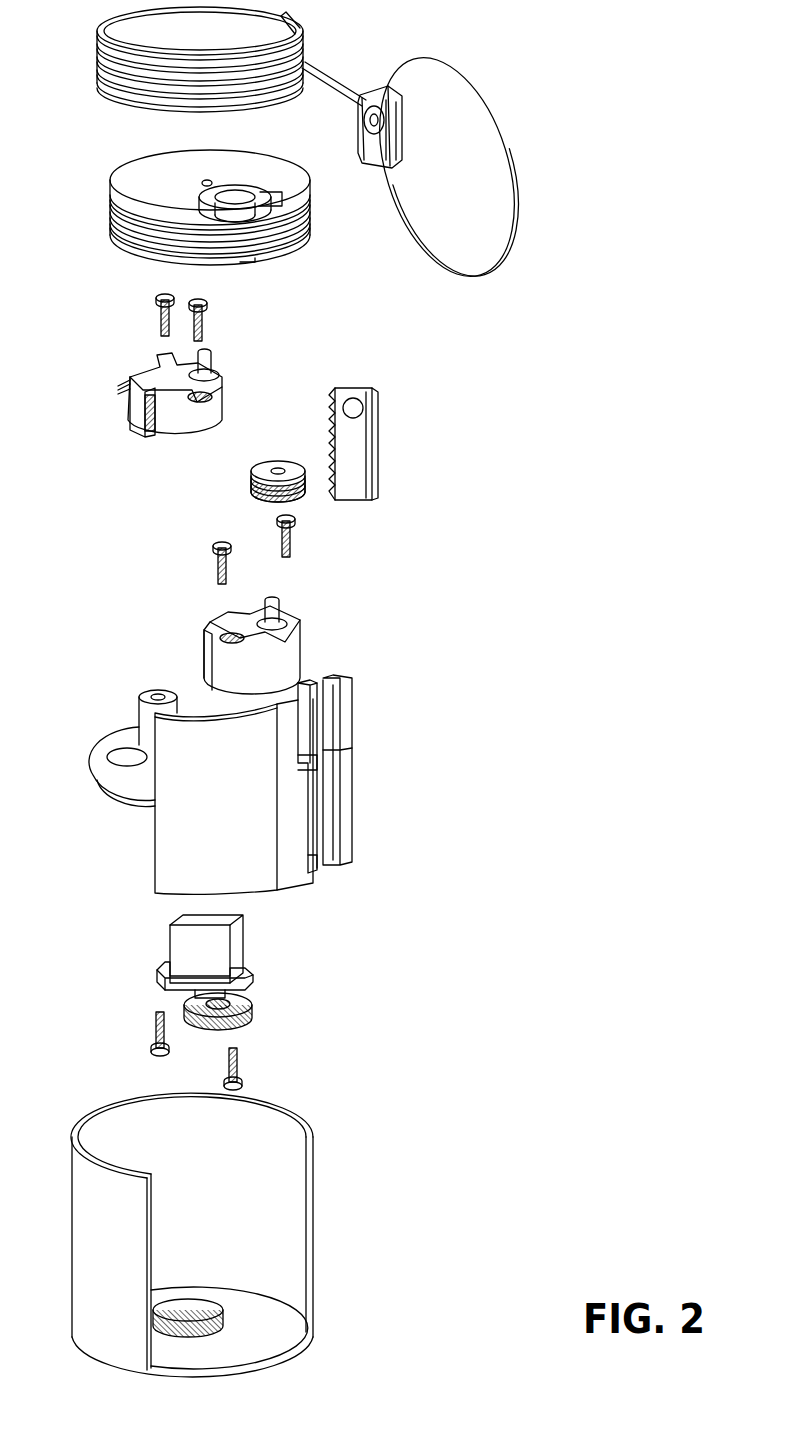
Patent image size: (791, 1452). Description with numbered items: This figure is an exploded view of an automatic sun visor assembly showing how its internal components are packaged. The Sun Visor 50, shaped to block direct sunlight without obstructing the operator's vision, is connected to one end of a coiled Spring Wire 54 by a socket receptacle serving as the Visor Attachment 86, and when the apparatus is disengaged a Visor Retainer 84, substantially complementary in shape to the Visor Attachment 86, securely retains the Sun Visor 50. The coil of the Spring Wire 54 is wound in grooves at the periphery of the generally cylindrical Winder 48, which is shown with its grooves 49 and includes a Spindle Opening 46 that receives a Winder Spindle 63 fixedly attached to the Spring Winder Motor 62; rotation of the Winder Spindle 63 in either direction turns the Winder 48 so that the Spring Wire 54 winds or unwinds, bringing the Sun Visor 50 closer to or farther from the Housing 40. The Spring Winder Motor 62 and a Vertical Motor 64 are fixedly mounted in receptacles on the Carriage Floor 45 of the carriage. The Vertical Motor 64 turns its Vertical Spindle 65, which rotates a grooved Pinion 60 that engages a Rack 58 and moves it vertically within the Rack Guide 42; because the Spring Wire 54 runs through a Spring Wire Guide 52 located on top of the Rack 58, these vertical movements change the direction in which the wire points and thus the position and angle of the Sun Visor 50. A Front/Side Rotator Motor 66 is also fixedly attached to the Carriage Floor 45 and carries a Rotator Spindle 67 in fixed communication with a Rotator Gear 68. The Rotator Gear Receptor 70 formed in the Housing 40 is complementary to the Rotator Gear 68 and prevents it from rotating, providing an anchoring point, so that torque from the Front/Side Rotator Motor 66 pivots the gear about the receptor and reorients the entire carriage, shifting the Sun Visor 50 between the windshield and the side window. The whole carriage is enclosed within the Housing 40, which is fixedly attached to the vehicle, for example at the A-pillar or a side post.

The Housing 40 is at (313, 1133).
The Rack Guide 42 is at (352, 700).
The Carriage Floor 45 is at (115, 793).
The Spindle Opening 46 is at (205, 185).
The Winder 48 is at (132, 178).
The spool groove 49 is at (120, 228).
The Sun Visor 50 is at (514, 192).
The Spring Wire Guide 52 is at (362, 405).
The Spring Wire 54 is at (300, 28).
The Rack 58 is at (372, 440).
The Pinion 60 is at (255, 485).
The Spring Winder Motor 62 is at (222, 410).
The Winder Spindle 63 is at (211, 365).
The Vertical Motor 64 is at (300, 655).
The Vertical Spindle 65 is at (275, 610).
The Front/Side Rotator Motor 66 is at (243, 960).
The Rotator Spindle 67 is at (190, 990).
The Rotator Gear 68 is at (262, 1006).
The Rotator Gear Receptor 70 is at (225, 1305).
The Visor Retainer 84 is at (275, 197).
The Visor Attachment 86 is at (360, 125).